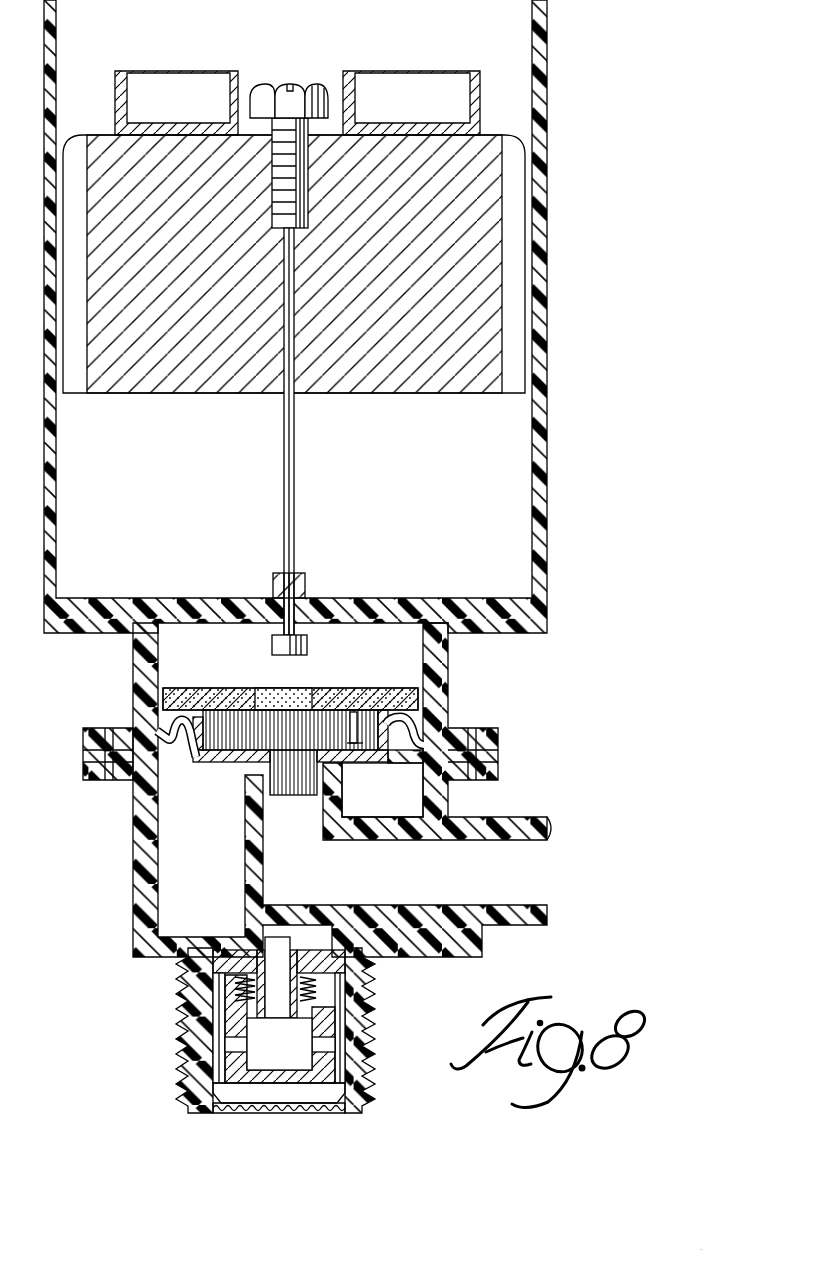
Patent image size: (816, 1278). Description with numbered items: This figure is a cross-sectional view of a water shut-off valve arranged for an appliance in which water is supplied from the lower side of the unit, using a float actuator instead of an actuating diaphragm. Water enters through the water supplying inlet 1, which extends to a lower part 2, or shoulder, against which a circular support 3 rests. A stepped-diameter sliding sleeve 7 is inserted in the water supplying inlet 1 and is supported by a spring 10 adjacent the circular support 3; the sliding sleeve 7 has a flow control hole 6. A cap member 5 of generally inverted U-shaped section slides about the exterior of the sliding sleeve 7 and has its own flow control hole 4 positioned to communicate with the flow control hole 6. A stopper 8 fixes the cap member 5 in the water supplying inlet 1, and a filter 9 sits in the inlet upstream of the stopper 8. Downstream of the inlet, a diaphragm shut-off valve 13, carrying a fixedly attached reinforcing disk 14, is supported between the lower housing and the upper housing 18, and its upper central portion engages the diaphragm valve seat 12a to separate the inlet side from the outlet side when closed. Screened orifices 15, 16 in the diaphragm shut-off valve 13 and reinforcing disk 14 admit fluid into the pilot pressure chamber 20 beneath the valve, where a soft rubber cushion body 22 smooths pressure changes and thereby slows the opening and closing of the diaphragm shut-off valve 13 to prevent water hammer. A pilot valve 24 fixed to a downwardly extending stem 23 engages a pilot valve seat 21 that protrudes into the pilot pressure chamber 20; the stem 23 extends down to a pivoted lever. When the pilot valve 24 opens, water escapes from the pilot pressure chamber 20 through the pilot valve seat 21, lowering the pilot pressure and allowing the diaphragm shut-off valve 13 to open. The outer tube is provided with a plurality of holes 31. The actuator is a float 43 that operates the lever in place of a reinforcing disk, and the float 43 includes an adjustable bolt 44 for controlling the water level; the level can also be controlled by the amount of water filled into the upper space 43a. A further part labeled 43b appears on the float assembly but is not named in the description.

The water supplying inlet 1 is at (192, 1106).
The lower part 2 is at (346, 933).
The circular support 3 is at (241, 956).
The flow control hole 4 is at (330, 1046).
The cap member 5 is at (230, 1078).
The flow control hole 6 is at (232, 1023).
The sliding sleeve 7 is at (313, 1011).
The stopper 8 is at (297, 1100).
The filter 9 is at (221, 1110).
The spring 10 is at (232, 992).
The diaphragm valve seat 12a is at (326, 768).
The diaphragm shut-off valve 13 is at (172, 727).
The reinforcing disk 14 is at (370, 726).
The screened orifice 15 is at (215, 763).
The screened orifice 16 is at (352, 743).
The upper housing 18 is at (142, 800).
The pilot pressure chamber 20 is at (405, 648).
The pilot valve seat 21 is at (305, 626).
The cushion body 22 is at (323, 690).
The stem 23 is at (288, 461).
The pilot valve 24 is at (272, 645).
The holes 31 is at (542, 411).
The float 43 is at (486, 156).
The upper space 43a is at (440, 84).
The shell 43b is at (515, 208).
The adjustable bolt 44 is at (266, 93).